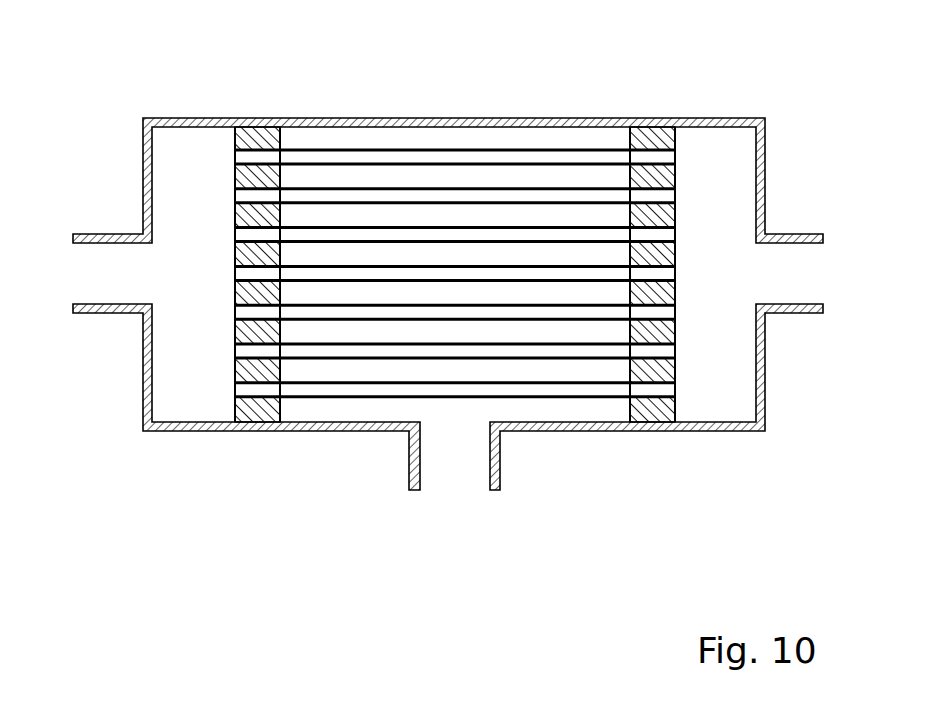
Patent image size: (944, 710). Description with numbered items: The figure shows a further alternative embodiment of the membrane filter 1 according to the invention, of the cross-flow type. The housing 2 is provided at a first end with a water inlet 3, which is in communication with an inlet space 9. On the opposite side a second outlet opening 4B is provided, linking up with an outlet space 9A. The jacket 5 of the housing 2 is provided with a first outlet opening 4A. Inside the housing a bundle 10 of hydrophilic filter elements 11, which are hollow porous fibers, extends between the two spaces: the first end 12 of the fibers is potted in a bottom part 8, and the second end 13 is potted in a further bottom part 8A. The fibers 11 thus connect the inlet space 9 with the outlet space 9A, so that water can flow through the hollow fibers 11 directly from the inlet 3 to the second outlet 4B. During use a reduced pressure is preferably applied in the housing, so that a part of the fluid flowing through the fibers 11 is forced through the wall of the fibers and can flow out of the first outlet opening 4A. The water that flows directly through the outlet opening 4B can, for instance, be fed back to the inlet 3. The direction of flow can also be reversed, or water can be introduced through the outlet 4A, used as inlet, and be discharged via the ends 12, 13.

The membrane filter 1 is at (744, 60).
The housing 2 is at (760, 118).
The water inlet 3 is at (108, 273).
The first outlet opening 4A is at (452, 455).
The second outlet opening 4B is at (790, 273).
The jacket 5 is at (471, 118).
The bottom part 8 is at (257, 407).
The bottom part 8A is at (653, 416).
The inlet space 9 is at (192, 372).
The outlet space 9A is at (717, 377).
The bundle of hydrophilic filter elements 10 is at (393, 130).
The hydrophilic filter elements 11 is at (365, 392).
The first end 12 is at (222, 146).
The second end 13 is at (692, 157).